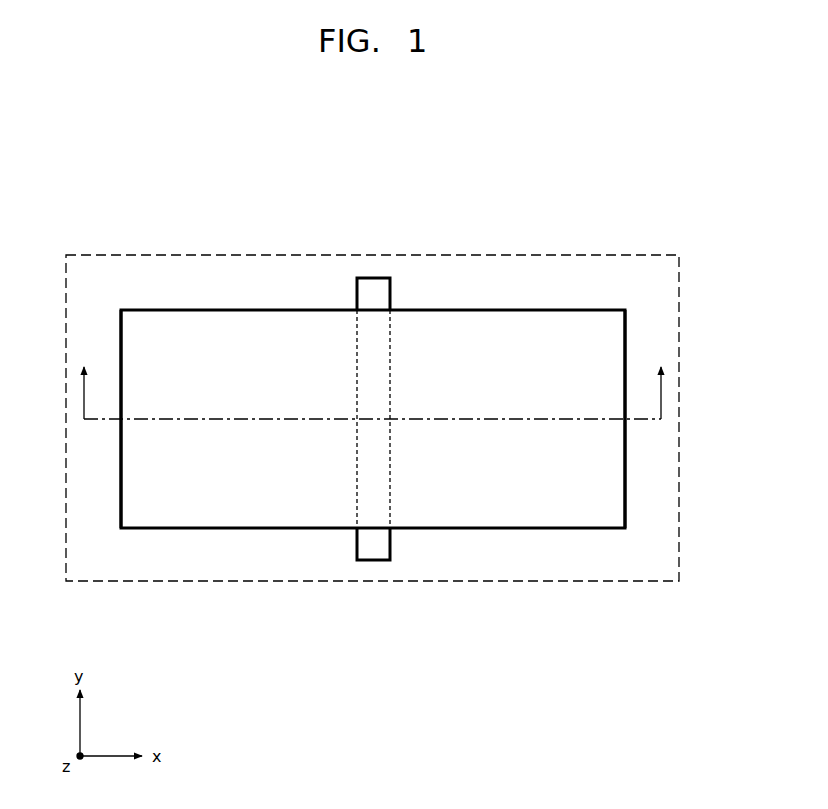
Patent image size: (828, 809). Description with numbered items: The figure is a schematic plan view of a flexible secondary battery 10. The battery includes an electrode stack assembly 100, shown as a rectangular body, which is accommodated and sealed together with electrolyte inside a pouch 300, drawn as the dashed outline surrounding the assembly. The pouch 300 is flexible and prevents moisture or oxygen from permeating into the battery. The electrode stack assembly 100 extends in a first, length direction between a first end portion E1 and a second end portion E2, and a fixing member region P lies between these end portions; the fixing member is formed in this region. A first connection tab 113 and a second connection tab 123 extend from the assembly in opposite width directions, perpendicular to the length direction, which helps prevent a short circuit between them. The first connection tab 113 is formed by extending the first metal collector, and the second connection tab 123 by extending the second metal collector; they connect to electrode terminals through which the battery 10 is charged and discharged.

The flexible secondary battery 10 is at (648, 190).
The pouch 300 is at (150, 254).
The electrode stack assembly 100 is at (117, 325).
The second connection tab 123 is at (376, 288).
The first connection tab 113 is at (373, 548).
The fixing member region P is at (373, 419).
The first end portion E1 is at (122, 532).
The second end portion E2 is at (624, 532).